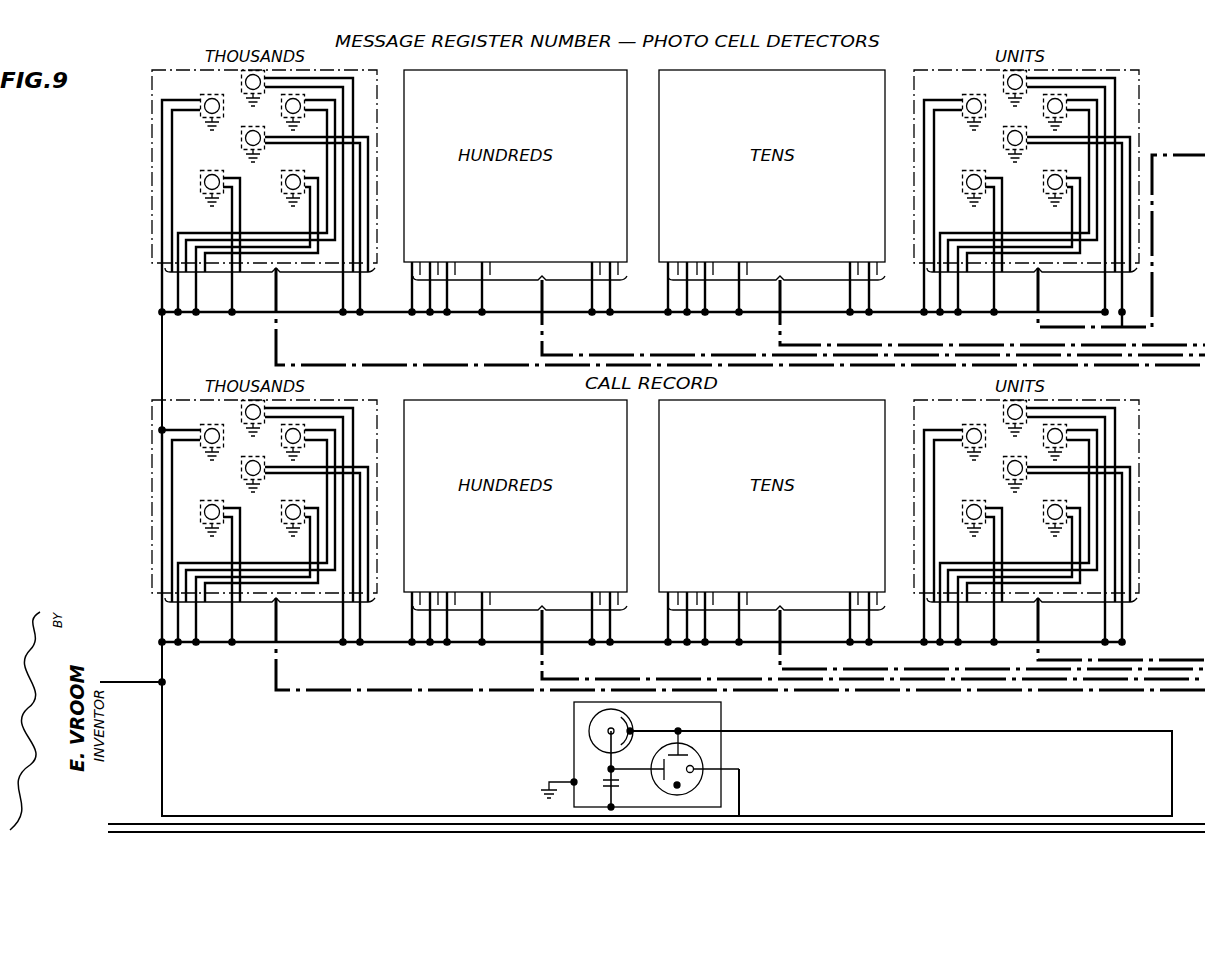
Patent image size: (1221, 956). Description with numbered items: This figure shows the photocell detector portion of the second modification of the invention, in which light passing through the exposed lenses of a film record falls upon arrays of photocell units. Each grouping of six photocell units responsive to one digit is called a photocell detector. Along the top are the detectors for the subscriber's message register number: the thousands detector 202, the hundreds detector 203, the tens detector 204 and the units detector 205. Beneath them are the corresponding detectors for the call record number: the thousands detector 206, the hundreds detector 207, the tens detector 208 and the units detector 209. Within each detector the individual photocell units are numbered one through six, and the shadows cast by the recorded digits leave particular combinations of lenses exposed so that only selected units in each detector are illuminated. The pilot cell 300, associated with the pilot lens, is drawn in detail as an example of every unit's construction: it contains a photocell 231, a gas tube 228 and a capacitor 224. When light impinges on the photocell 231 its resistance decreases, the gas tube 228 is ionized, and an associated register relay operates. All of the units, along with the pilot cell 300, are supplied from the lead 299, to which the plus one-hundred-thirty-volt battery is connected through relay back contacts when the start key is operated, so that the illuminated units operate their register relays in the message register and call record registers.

The thousands photocell detector of the message register number 202 is at (167, 66).
The hundreds photocell detector of the message register number 203 is at (429, 66).
The tens photocell detector of the message register number 204 is at (685, 66).
The units photocell detector of the message register number 205 is at (1015, 181).
The thousands photocell detector of the call record number 206 is at (247, 513).
The hundreds photocell detector of the call record number 207 is at (429, 396).
The tens photocell detector of the call record number 208 is at (796, 404).
The units photocell detector of the call record number 209 is at (1026, 513).
The photocell 231 is at (589, 731).
The pilot cell 300 is at (649, 756).
The gas tube 228 is at (705, 757).
The capacitor 224 is at (618, 787).
The lead 299 is at (425, 824).